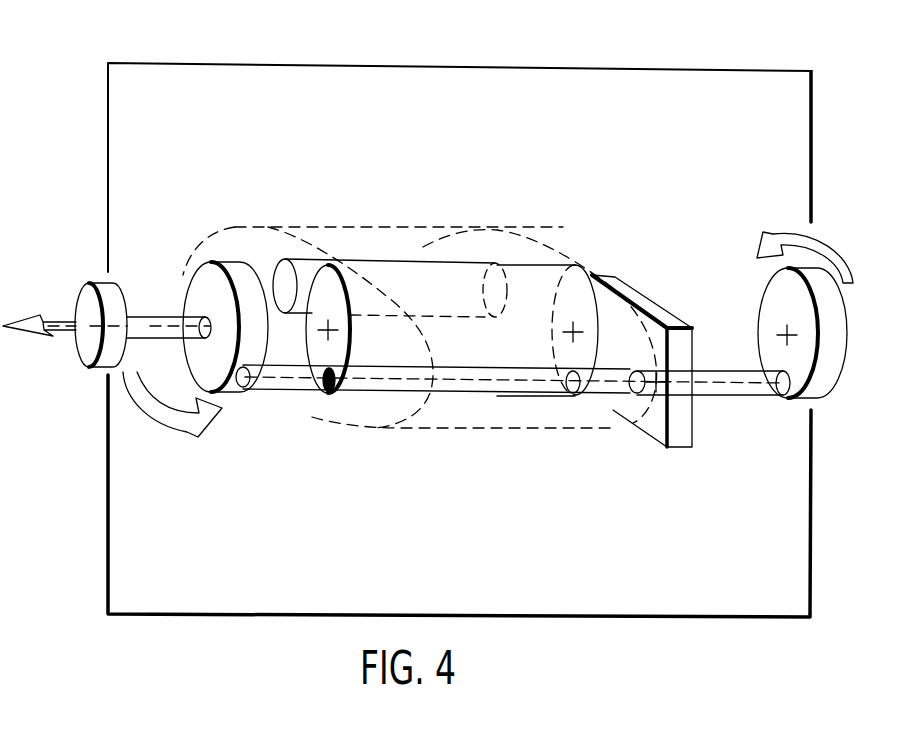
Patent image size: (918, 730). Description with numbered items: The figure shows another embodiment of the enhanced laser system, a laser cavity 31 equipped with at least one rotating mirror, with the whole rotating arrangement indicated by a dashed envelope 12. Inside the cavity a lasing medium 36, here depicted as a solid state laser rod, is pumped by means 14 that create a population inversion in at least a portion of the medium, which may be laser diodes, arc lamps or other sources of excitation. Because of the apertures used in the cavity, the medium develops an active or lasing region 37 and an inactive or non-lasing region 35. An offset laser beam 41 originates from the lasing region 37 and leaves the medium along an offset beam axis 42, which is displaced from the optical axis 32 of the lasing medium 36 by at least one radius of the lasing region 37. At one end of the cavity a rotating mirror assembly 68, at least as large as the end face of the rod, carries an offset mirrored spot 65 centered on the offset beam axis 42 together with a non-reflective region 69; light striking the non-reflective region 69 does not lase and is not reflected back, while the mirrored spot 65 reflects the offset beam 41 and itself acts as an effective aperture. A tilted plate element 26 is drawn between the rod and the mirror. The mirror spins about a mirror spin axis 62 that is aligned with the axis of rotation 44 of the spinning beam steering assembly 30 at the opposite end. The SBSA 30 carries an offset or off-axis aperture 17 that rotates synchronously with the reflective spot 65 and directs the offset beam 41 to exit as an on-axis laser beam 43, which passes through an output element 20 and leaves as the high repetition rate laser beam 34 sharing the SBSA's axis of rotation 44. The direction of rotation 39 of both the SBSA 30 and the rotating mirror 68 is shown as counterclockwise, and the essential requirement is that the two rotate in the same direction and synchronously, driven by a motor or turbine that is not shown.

The laser cavity 31 is at (753, 71).
The high repetition rate laser beam 34 is at (65, 320).
The output disk 20 is at (88, 350).
The on-axis laser beam 43 is at (148, 314).
The axis of rotation 44 is at (165, 326).
The spinning beam steering assembly 30 is at (190, 298).
The direction of rotation 39 is at (157, 427).
The optical module envelope 12 is at (222, 227).
The optical axis 32 is at (319, 323).
The inactive or non-lasing region 35 is at (318, 290).
The pumping means 14 is at (380, 258).
The lasing medium 36 is at (560, 263).
The mirror 26 is at (617, 280).
The active or lasing region 37 is at (320, 392).
The offset or off-axis aperture 17 is at (244, 388).
The offset laser beam 41 is at (287, 390).
The offset laser beam axis 42 is at (300, 391).
The offset mirrored spot 65 is at (785, 392).
The rotating mirror assembly 68 is at (779, 362).
The non-reflective region 69 is at (775, 302).
The mirror spin axis 62 is at (785, 333).